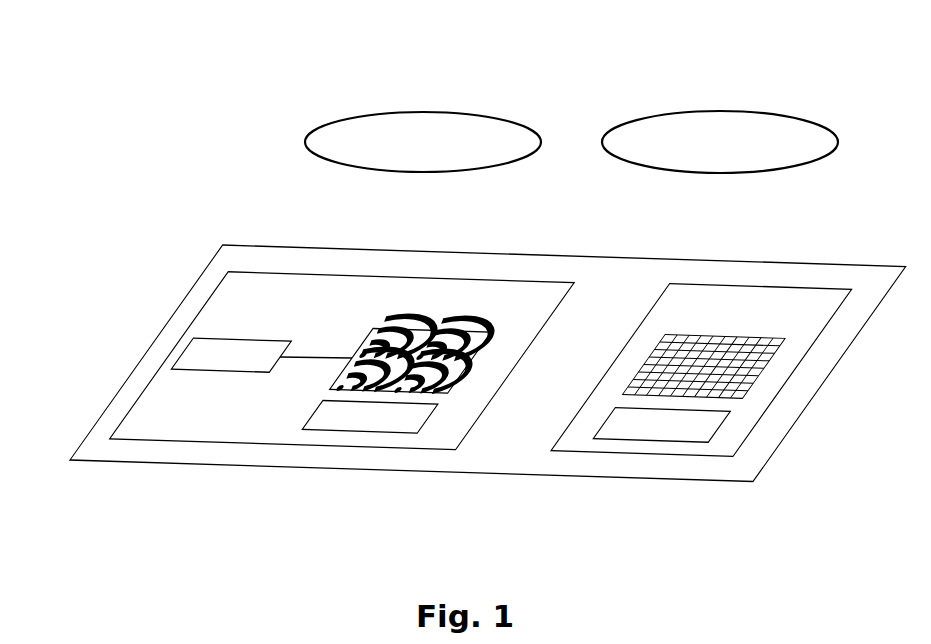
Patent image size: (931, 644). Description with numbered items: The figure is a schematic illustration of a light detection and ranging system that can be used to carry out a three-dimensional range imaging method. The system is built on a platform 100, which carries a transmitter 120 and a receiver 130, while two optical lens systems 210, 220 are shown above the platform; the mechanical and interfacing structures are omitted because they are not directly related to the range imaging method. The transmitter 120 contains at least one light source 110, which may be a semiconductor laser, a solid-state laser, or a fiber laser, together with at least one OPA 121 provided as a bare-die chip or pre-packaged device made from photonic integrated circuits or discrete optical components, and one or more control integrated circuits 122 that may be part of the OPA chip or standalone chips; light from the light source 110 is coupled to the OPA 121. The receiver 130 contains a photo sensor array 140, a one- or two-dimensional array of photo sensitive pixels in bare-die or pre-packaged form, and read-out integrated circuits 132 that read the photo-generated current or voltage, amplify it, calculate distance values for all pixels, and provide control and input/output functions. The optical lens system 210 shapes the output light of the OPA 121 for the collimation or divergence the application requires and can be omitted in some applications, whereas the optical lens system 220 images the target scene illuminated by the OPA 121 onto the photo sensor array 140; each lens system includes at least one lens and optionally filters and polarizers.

The platform 100 is at (100, 462).
The light source 110 is at (180, 347).
The transmitter 120 is at (272, 443).
The OPA 121 is at (365, 335).
The control integrated circuits 122 is at (328, 437).
The receiver 130 is at (695, 453).
The read-out integrated circuits 132 is at (608, 436).
The photo sensor array 140 is at (660, 347).
The optical lens system 210 is at (373, 112).
The optical lens system 220 is at (627, 118).